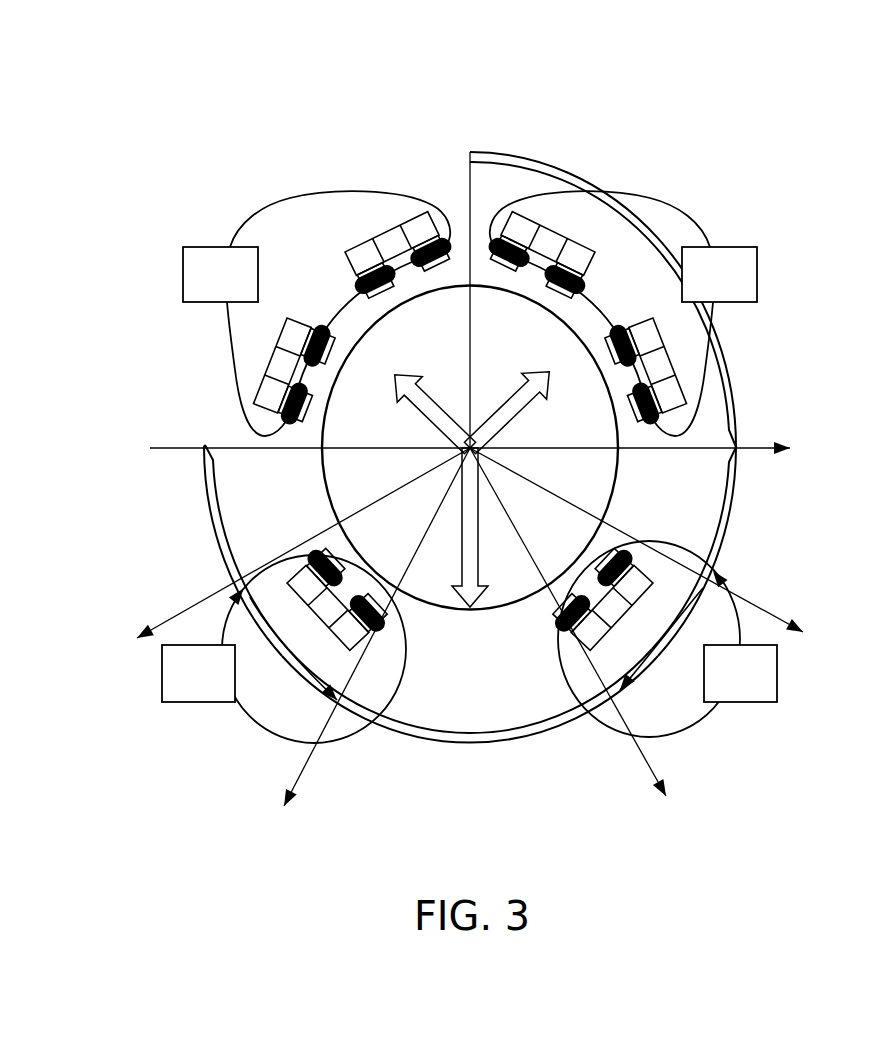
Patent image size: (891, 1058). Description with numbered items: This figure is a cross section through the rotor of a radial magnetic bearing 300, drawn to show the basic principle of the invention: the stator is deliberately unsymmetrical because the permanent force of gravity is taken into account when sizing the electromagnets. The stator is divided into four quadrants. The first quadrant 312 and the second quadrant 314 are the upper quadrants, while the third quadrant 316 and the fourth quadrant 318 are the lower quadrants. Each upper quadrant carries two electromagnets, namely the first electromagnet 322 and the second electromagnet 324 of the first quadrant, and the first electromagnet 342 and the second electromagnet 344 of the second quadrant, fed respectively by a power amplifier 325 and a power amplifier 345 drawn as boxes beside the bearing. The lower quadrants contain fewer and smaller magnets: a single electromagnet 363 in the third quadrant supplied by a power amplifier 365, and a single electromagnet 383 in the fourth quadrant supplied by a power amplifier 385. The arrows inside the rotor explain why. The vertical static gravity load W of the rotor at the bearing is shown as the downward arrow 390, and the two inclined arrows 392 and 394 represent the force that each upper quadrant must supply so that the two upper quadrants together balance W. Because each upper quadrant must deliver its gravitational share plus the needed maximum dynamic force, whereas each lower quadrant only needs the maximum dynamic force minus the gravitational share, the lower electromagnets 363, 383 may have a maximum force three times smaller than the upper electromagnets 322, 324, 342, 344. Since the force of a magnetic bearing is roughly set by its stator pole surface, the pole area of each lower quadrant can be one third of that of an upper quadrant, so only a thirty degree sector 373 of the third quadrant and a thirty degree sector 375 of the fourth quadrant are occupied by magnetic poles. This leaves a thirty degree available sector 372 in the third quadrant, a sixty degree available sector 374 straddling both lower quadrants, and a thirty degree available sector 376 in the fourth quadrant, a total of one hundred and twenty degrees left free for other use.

The system 300 is at (760, 118).
The first quadrant 312 is at (155, 235).
The second quadrant 314 is at (785, 235).
The third quadrant 316 is at (782, 706).
The fourth quadrant 318 is at (158, 706).
The first electromagnet of the first quadrant 322 is at (256, 395).
The second electromagnet of the first quadrant 324 is at (405, 213).
The power amplifier 325 is at (208, 247).
The first electromagnet of the second quadrant 342 is at (535, 213).
The second electromagnet of the second quadrant 344 is at (684, 394).
The power amplifier 345 is at (733, 247).
The electromagnet of the third quadrant 363 is at (608, 645).
The power amplifier 365 is at (740, 702).
The available sector of the third quadrant 372 is at (733, 513).
The sector used by the electromagnet of the third quadrant 373 is at (648, 655).
The available sector in both the third and fourth quadrants 374 is at (468, 745).
The sector used by the electromagnet of the fourth quadrant 375 is at (291, 660).
The available sector of the fourth quadrant 376 is at (207, 513).
The electromagnet of the fourth quadrant 383 is at (332, 645).
The power amplifier 385 is at (200, 702).
The vertical static gravity load W 390 is at (483, 518).
The force needed from first quadrant 392 is at (433, 394).
The force needed from second quadrant 394 is at (504, 397).